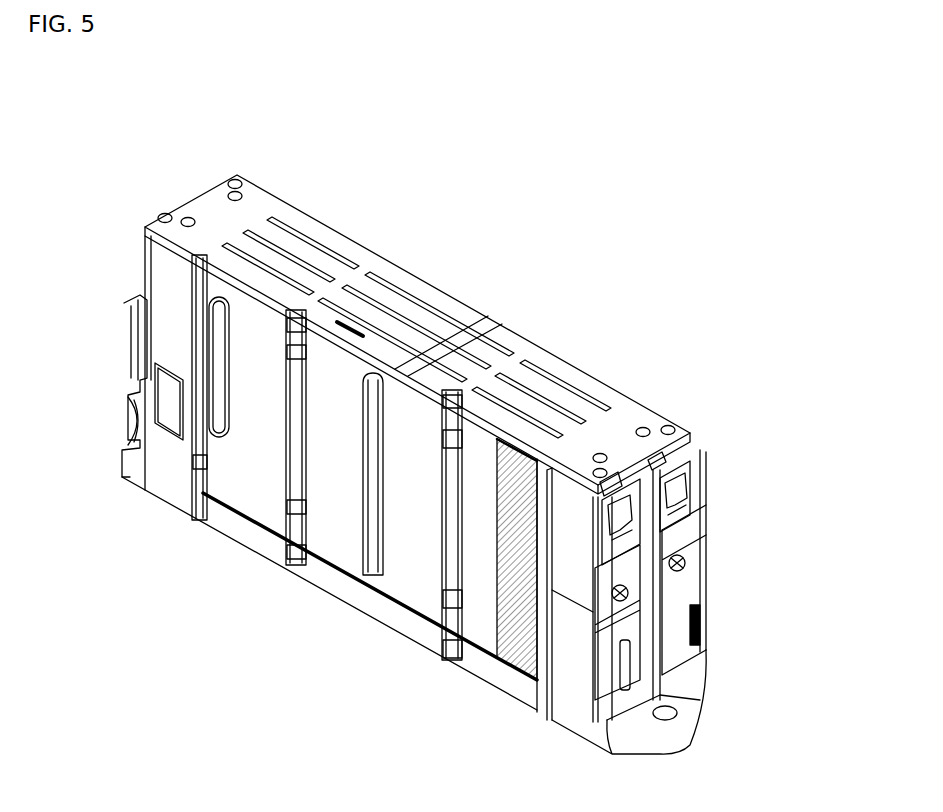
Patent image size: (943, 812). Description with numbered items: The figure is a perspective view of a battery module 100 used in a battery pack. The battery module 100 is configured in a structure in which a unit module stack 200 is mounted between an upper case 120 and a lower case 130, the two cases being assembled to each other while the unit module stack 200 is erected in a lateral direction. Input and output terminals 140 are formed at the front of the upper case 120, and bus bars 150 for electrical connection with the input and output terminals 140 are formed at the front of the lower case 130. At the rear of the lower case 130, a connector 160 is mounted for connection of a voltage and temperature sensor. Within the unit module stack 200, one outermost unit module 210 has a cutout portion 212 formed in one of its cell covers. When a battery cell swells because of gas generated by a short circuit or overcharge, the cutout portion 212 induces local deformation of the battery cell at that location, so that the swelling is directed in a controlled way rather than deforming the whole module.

The battery module 100 is at (193, 143).
The upper case 120 is at (498, 314).
The lower case 130 is at (570, 715).
The input and output terminals 140 is at (691, 491).
The bus bars 150 is at (678, 502).
The connector 160 is at (137, 335).
The unit module stack 200 is at (255, 466).
The outermost unit module 210 is at (348, 550).
The cutout portion 212 is at (520, 621).